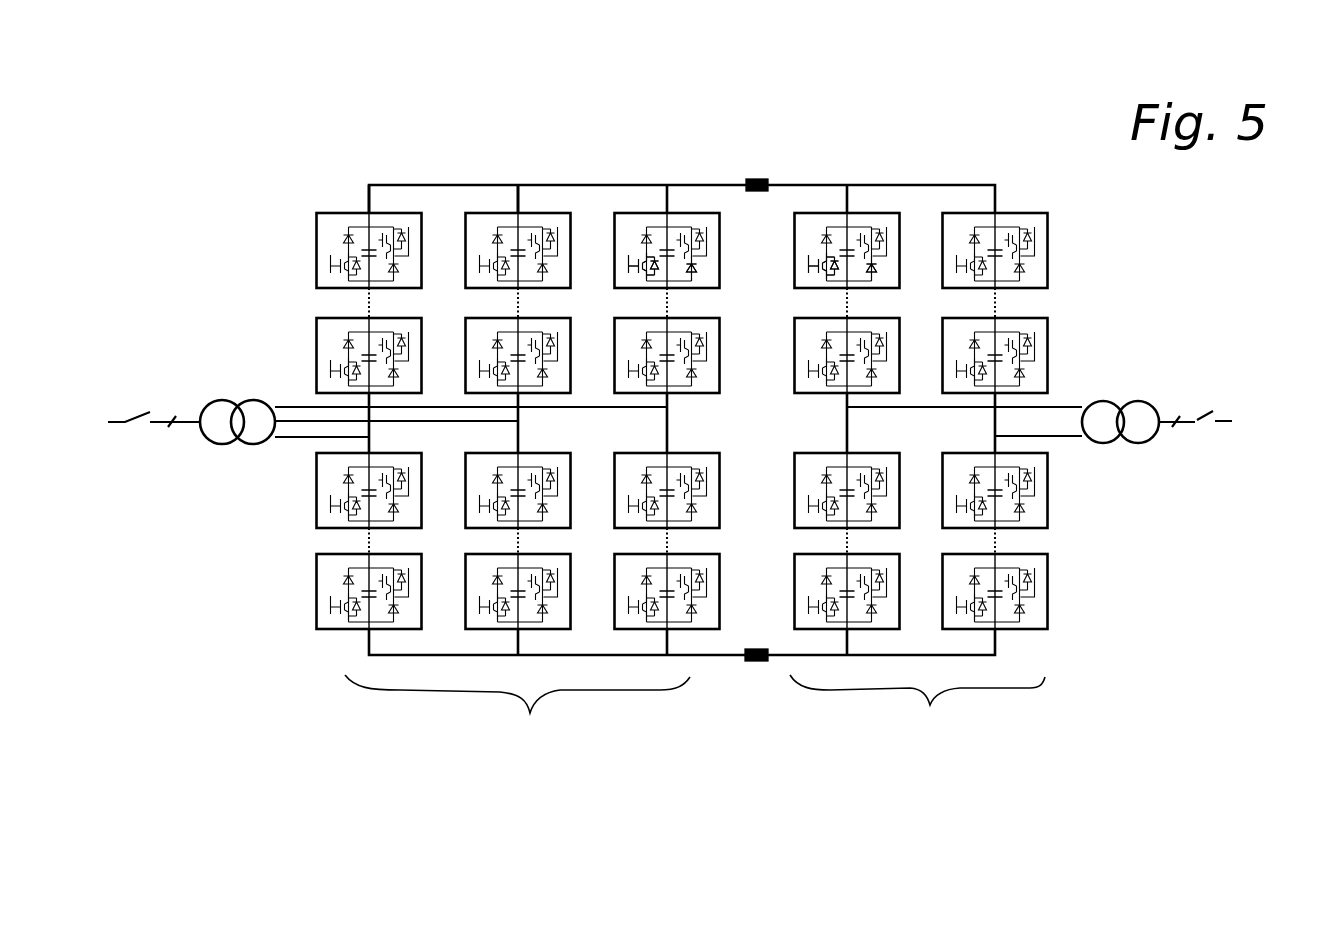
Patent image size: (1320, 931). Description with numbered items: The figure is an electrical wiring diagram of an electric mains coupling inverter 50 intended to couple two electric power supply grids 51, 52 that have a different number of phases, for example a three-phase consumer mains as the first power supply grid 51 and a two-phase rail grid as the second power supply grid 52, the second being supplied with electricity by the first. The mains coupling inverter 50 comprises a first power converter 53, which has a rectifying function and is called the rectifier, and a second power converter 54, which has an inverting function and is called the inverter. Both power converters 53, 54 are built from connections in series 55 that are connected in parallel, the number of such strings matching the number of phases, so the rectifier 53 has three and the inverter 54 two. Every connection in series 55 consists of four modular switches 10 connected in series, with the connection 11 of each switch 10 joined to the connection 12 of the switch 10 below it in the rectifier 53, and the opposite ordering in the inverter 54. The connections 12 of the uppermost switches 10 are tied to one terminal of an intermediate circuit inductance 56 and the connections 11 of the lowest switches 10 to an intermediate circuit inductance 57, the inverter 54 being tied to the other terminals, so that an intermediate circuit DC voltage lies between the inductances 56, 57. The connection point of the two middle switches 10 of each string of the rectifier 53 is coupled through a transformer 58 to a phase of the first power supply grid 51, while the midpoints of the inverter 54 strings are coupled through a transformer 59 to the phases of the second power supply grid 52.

The modular switch 10 is at (326, 236).
The connection 11 is at (622, 262).
The connection 12 is at (696, 238).
The electric mains coupling inverter 50 is at (1135, 642).
The first power supply grid 51 is at (131, 435).
The second power supply grid 52 is at (1200, 430).
The first power converter 53 is at (517, 731).
The second power converter 54 is at (917, 729).
The connection in series 55 is at (481, 200).
The intermediate circuit inductance 56 is at (762, 178).
The intermediate circuit inductance 57 is at (758, 662).
The transformer 58 is at (233, 437).
The transformer 59 is at (1119, 437).